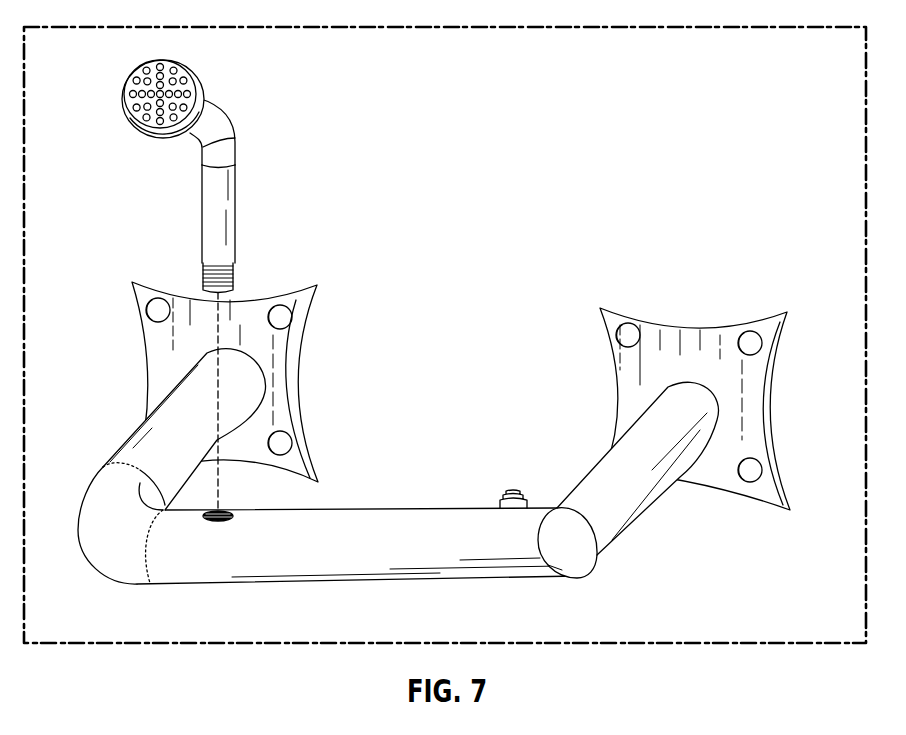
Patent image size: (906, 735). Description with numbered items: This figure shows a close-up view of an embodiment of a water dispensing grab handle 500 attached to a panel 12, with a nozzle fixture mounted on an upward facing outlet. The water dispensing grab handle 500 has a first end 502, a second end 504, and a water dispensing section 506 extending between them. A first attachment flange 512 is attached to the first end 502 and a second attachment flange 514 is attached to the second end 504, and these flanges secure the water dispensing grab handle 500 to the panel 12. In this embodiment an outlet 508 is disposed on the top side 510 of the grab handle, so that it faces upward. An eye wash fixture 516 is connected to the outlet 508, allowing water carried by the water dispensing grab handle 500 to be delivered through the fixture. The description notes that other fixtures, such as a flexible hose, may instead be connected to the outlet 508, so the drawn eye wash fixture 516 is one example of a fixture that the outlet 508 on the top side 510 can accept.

The panel 12 is at (453, 395).
The water dispensing grab handle 500 is at (670, 179).
The first end 502 is at (200, 380).
The second end 504 is at (707, 418).
The water dispensing section 506 is at (375, 528).
The outlet 508 is at (220, 510).
The top side 510 is at (298, 538).
The first attachment flange 512 is at (157, 365).
The second attachment flange 514 is at (627, 378).
The eye wash fixture 516 is at (237, 148).